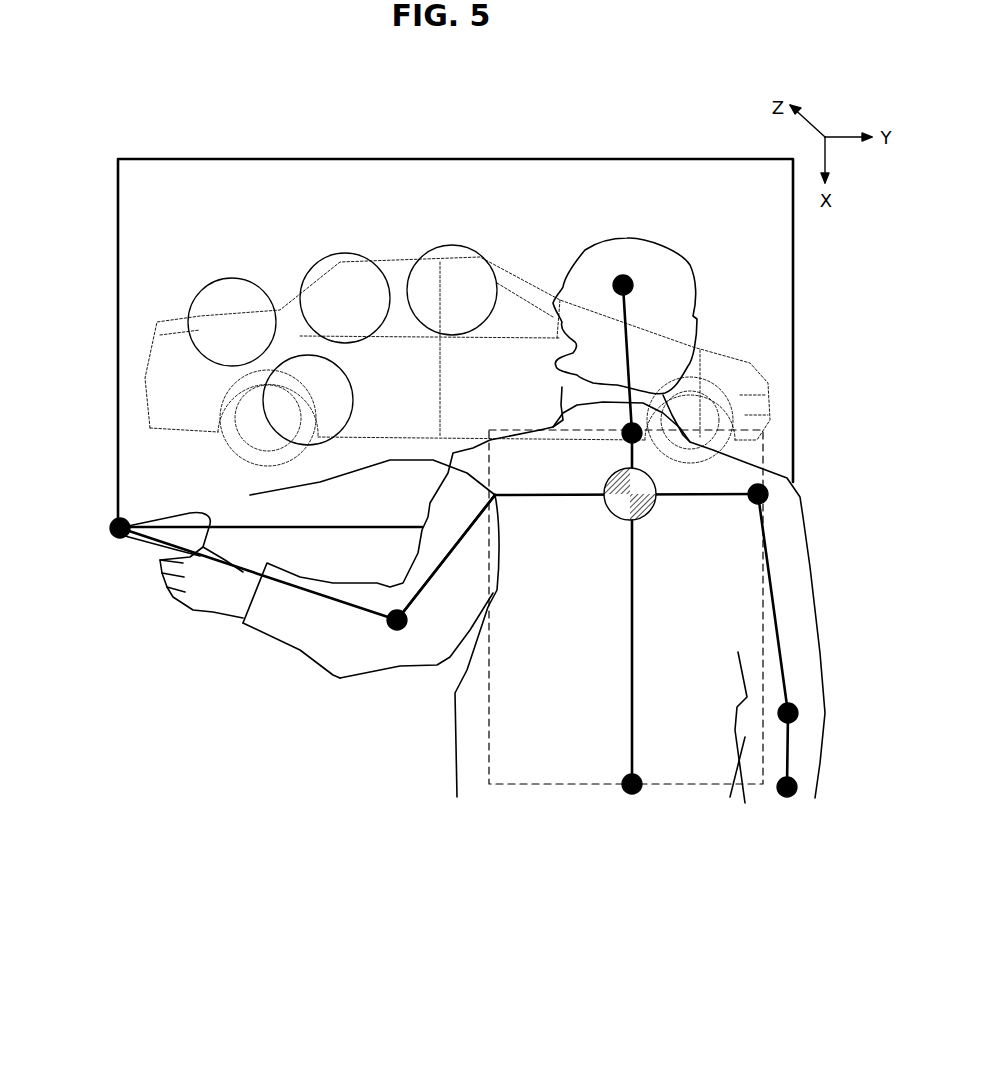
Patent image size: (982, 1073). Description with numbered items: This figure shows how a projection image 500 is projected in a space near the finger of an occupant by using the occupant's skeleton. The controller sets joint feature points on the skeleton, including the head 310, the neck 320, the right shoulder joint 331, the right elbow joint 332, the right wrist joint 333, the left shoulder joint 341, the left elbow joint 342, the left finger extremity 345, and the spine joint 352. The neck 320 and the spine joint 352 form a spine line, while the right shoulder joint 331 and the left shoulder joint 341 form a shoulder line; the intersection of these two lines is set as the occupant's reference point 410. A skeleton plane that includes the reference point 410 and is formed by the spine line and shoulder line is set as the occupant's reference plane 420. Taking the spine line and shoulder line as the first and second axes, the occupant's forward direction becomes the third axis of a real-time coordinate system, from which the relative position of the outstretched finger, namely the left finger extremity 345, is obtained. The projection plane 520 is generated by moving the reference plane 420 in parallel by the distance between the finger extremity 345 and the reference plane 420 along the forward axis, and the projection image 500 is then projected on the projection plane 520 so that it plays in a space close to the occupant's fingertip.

The projection image 500 is at (292, 147).
The projection plane 520 is at (457, 159).
The head 310 is at (622, 275).
The neck 320 is at (636, 430).
The right shoulder joint 331 is at (762, 485).
The right elbow joint 332 is at (793, 705).
The right wrist joint 333 is at (787, 797).
The left shoulder joint 341 is at (250, 495).
The left elbow joint 342 is at (393, 630).
The left finger extremity 345 is at (113, 532).
The spine joint 352 is at (635, 795).
The reference point 410 is at (625, 522).
The reference plane 420 is at (527, 785).